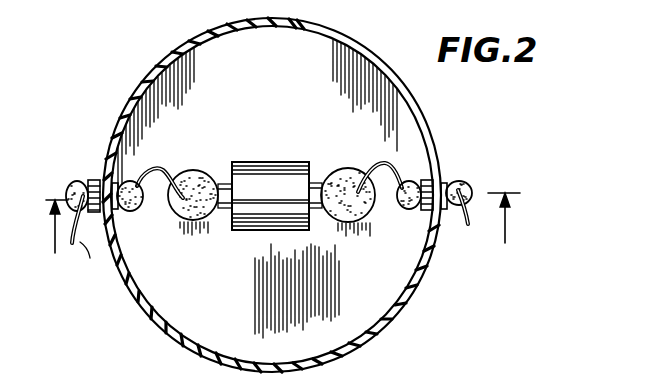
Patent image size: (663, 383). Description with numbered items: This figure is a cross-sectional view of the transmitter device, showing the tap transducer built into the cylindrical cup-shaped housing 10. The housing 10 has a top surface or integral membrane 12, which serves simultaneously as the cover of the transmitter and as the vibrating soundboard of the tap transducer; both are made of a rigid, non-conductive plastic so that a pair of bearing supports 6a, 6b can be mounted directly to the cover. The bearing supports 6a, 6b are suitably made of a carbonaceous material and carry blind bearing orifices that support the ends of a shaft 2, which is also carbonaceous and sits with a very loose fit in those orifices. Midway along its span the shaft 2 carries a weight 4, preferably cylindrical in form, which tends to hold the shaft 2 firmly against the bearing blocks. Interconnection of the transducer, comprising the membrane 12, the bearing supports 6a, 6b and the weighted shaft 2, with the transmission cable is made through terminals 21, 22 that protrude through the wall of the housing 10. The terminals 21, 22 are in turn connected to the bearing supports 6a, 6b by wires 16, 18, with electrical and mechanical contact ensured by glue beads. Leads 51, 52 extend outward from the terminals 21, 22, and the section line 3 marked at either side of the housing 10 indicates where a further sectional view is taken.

The shaft 2 is at (318, 190).
The section line 3- 3 is at (282, 240).
The weight 4 is at (263, 178).
The bearing support 6a is at (355, 176).
The bearing support 6b is at (187, 196).
The housing 10 is at (378, 326).
The membrane 12 is at (233, 314).
The wire 16 is at (386, 178).
The wire 18 is at (157, 177).
The terminal 21 is at (442, 181).
The terminal 22 is at (92, 182).
The lead wire 51 is at (462, 226).
The lead wire 52 is at (89, 256).